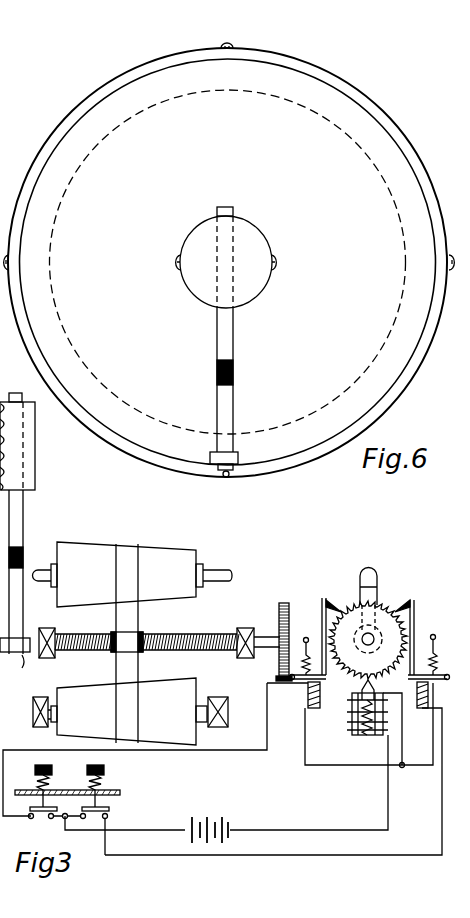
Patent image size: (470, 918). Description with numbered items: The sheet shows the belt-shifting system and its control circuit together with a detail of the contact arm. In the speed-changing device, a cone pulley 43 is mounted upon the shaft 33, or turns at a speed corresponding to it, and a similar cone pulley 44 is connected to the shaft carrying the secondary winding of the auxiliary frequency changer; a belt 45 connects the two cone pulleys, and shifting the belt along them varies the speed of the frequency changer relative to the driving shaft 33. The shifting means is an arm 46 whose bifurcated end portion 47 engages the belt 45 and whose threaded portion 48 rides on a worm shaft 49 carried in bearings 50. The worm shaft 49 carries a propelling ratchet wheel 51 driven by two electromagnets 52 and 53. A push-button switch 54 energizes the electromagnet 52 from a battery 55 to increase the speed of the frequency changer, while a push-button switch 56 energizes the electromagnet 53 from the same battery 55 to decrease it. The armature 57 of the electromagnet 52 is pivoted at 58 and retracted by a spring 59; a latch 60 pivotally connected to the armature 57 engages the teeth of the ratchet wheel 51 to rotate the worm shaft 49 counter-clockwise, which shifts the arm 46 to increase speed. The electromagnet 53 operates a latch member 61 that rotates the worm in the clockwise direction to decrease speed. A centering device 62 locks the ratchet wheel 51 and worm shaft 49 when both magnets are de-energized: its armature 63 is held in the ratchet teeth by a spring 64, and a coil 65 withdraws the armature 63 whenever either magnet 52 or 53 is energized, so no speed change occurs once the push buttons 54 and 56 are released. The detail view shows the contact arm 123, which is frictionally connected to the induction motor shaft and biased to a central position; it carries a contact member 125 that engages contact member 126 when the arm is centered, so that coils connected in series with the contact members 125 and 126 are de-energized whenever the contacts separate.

In FIG. 6, the contact arm 123 is at (228, 426).
In FIG. 6, the contact member 125 is at (231, 466).
In FIG. 6, the contact member 126 is at (216, 467).
In FIG. 6, the shaft 33 is at (17, 521).
In FIG. 3, the shaft 33 is at (200, 565).
In FIG. 3, the cone pulley 43 is at (165, 549).
In FIG. 3, the cone pulley 44 is at (168, 684).
In FIG. 3, the belt 45 is at (120, 545).
In FIG. 3, the bifurcated end portion 47 is at (372, 560).
In FIG. 3, the worm shaft 49 is at (197, 630).
In FIG. 3, the bearings 50 is at (45, 627).
In FIG. 3, the propelling ratchet wheel 51 is at (283, 603).
In FIG. 3, the electromagnet 52 is at (296, 724).
In FIG. 3, the electromagnet 53 is at (469, 715).
In FIG. 3, the push-button switch 54 is at (62, 792).
In FIG. 3, the battery 55 is at (214, 818).
In FIG. 3, the push-button switch 56 is at (105, 810).
In FIG. 3, the armature 57 is at (368, 692).
In FIG. 3, the pivot 58 is at (290, 677).
In FIG. 3, the spring 59 is at (306, 638).
In FIG. 3, the latch 60 is at (316, 632).
In FIG. 3, the latch member 61 is at (436, 638).
In FIG. 3, the centering device 62 is at (334, 738).
In FIG. 3, the armature 63 is at (373, 685).
In FIG. 3, the spring 64 is at (365, 738).
In FIG. 3, the coil 65 is at (352, 735).
In FIG. 3, the arm 46 is at (372, 596).
In FIG. 3, the threaded portion 48 is at (371, 634).